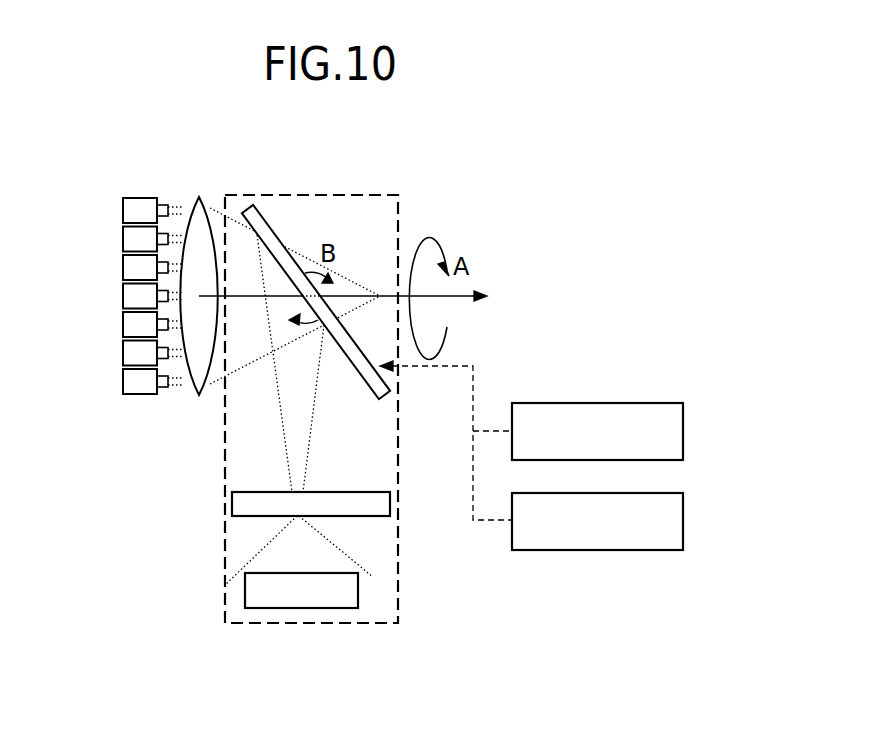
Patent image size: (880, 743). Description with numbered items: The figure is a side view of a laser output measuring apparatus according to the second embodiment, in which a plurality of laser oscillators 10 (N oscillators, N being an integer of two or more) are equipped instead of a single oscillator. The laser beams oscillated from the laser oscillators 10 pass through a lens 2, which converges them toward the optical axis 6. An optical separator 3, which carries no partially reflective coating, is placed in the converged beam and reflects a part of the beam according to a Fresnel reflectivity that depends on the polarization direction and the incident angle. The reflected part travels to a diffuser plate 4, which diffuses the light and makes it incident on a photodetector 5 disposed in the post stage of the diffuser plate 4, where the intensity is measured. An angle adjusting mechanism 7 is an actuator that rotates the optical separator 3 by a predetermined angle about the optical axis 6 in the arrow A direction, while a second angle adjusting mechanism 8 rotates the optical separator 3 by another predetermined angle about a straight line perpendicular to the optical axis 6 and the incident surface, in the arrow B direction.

The laser oscillators 10 is at (123, 293).
The lens 2 is at (198, 196).
The optical separator 3 is at (277, 232).
The diffuser plate 4 is at (390, 503).
The photodetector 5 is at (358, 590).
The optical axis 6 is at (458, 298).
The angle adjusting mechanism 7 is at (683, 431).
The angle adjusting mechanism 8 is at (683, 521).